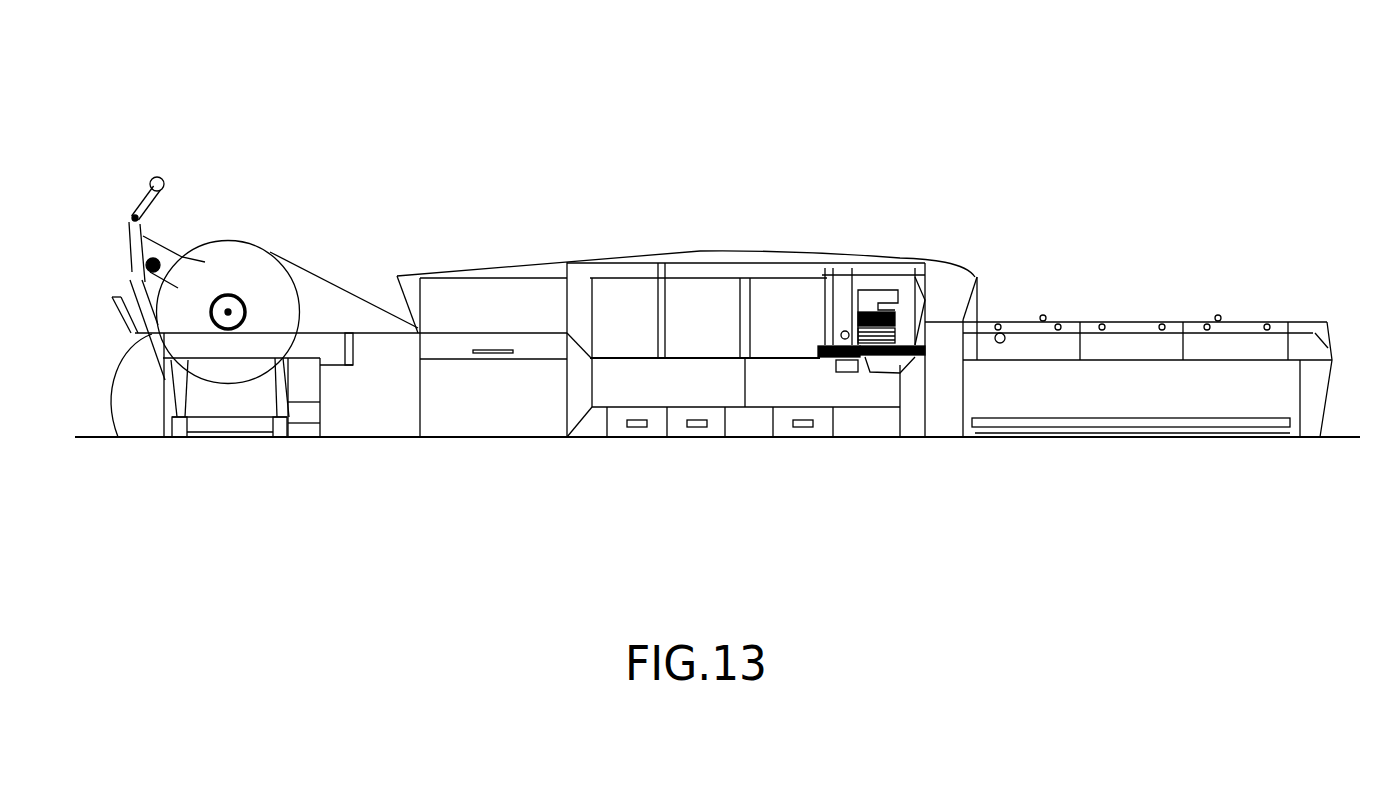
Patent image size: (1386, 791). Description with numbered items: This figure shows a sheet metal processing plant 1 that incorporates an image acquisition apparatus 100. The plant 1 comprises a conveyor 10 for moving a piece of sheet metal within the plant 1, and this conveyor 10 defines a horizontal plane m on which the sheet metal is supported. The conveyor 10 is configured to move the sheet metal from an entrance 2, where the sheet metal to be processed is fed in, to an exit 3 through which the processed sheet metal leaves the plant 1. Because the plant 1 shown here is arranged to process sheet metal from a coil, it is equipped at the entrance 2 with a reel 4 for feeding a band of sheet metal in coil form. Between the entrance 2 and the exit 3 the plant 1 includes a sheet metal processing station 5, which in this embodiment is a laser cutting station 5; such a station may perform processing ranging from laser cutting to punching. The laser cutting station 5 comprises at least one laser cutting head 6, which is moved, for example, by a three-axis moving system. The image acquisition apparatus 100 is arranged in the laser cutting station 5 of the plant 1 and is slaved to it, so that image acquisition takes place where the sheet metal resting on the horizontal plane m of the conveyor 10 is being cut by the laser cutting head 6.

The sheet metal processing plant 1 is at (779, 98).
The entrance 2 is at (377, 283).
The exit 3 is at (1078, 305).
The reel 4 is at (229, 322).
The sheet metal processing station 5 is at (698, 306).
The laser cutting head 6 is at (849, 283).
The conveyor 10 is at (845, 362).
The horizontal plane m is at (845, 365).
The image acquisition apparatus 100 is at (887, 352).